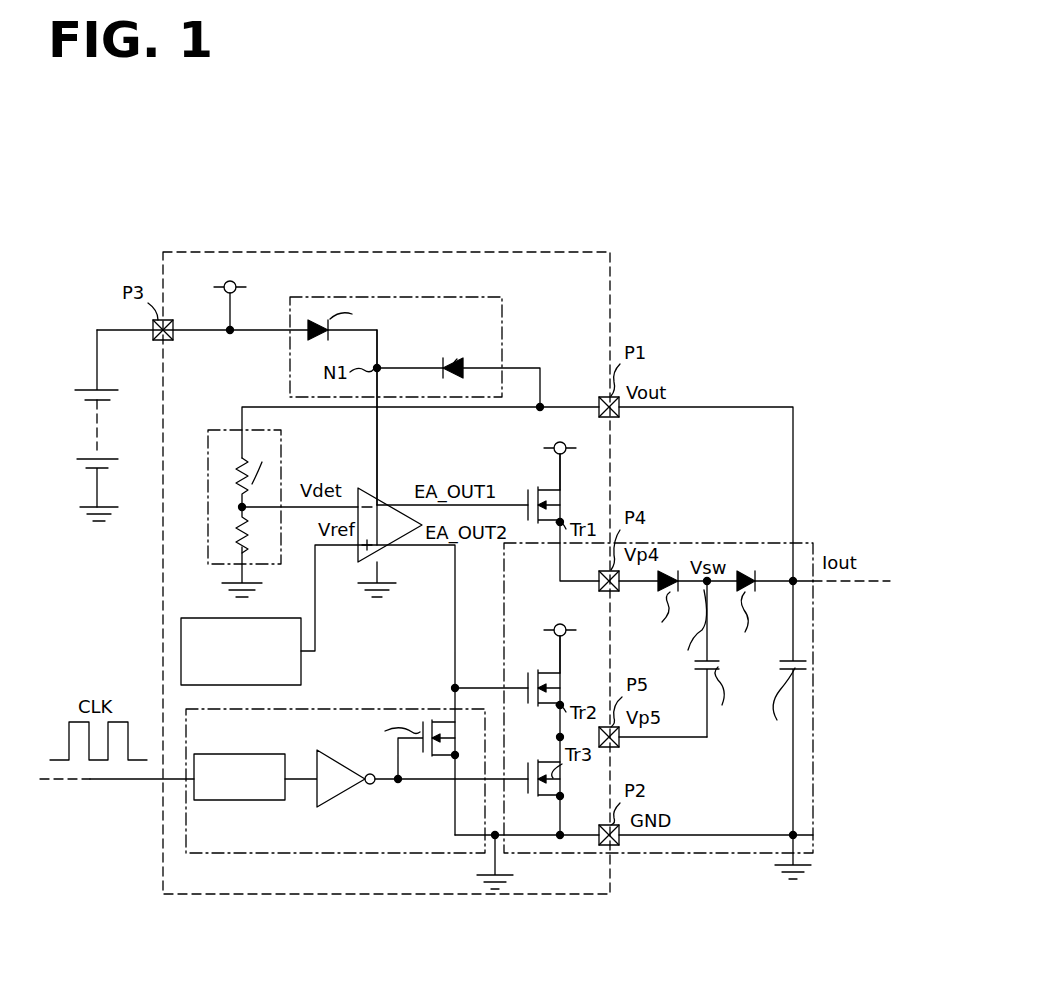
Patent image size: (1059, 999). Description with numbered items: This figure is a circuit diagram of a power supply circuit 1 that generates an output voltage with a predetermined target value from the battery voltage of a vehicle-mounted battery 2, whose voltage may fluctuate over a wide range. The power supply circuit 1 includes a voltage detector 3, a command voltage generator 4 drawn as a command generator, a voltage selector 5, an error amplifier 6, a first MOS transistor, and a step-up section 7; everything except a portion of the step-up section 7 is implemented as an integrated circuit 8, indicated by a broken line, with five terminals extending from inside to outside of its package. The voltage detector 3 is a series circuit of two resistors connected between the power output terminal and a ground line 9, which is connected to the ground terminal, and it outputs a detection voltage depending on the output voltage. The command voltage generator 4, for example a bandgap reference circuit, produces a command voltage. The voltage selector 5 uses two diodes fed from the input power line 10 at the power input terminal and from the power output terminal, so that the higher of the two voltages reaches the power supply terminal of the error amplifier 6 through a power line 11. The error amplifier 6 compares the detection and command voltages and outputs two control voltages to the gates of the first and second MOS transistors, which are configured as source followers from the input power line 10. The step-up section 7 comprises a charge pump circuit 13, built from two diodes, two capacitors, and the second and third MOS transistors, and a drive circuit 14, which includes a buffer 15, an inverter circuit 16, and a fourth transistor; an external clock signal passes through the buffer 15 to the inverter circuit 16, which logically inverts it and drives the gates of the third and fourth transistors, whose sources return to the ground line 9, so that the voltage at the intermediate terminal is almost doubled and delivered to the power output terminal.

The power supply circuit 1 is at (414, 207).
The battery 2 is at (86, 434).
The voltage detector 3 is at (212, 430).
The command voltage generator 4 is at (196, 616).
The voltage selector 5 is at (438, 297).
The error amplifier 6 is at (382, 490).
The step-up section 7 is at (511, 911).
The integrated circuit 8 is at (612, 262).
The ground line 9 is at (250, 574).
The input power line 10 is at (236, 292).
The power line 11 is at (375, 432).
The charge pump circuit 13 is at (732, 543).
The drive circuit 14 is at (335, 758).
The buffer 15 is at (252, 800).
The inverter circuit 16 is at (346, 800).